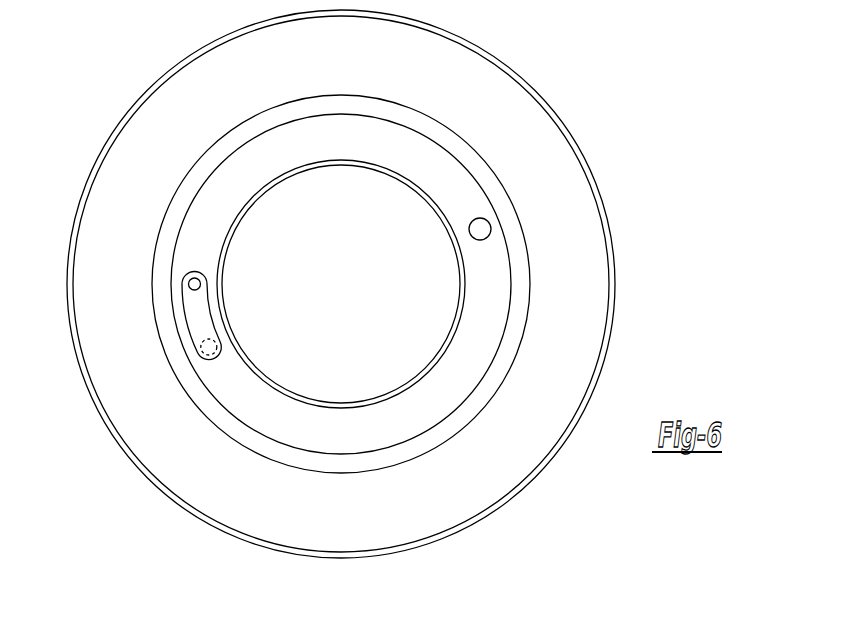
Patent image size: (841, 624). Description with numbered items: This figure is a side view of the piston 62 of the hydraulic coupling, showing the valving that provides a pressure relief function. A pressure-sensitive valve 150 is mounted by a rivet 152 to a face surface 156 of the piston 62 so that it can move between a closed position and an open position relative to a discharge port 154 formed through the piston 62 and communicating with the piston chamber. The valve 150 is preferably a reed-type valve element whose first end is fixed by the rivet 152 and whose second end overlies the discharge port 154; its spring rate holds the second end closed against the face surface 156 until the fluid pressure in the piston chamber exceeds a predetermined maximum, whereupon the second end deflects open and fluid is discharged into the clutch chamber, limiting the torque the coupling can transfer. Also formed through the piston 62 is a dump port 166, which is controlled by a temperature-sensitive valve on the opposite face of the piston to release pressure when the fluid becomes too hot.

The piston 62 is at (568, 105).
The pressure-sensitive valve 150 is at (166, 333).
The rivet 152 is at (199, 280).
The discharge port 154 is at (215, 341).
The face surface 156 is at (492, 298).
The dump port 166 is at (487, 221).